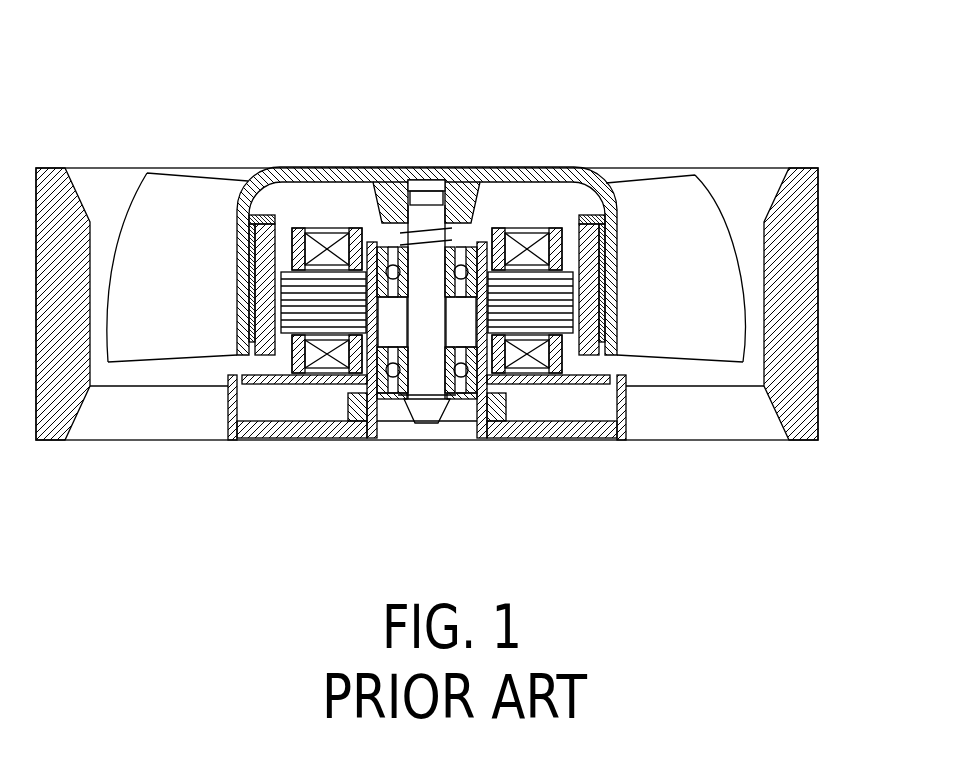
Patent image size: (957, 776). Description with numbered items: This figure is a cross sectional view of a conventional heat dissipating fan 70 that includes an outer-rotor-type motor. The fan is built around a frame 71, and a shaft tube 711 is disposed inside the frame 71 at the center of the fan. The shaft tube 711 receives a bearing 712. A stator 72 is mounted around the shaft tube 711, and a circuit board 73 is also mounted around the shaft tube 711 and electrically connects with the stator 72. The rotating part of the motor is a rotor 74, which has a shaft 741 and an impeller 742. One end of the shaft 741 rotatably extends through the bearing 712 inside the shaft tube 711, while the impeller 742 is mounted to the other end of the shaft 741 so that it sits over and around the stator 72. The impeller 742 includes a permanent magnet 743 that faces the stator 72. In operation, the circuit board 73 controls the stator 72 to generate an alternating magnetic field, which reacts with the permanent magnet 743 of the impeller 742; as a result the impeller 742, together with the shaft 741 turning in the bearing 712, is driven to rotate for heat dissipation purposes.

The heat dissipating fan 70 is at (826, 197).
The frame 71 is at (800, 178).
The stator 72 is at (557, 220).
The circuit board 73 is at (604, 387).
The rotor 74 is at (298, 167).
The shaft tube 711 is at (500, 367).
The bearing 712 is at (383, 398).
The shaft 741 is at (428, 383).
The impeller 742 is at (328, 173).
The permanent magnet 743 is at (252, 225).